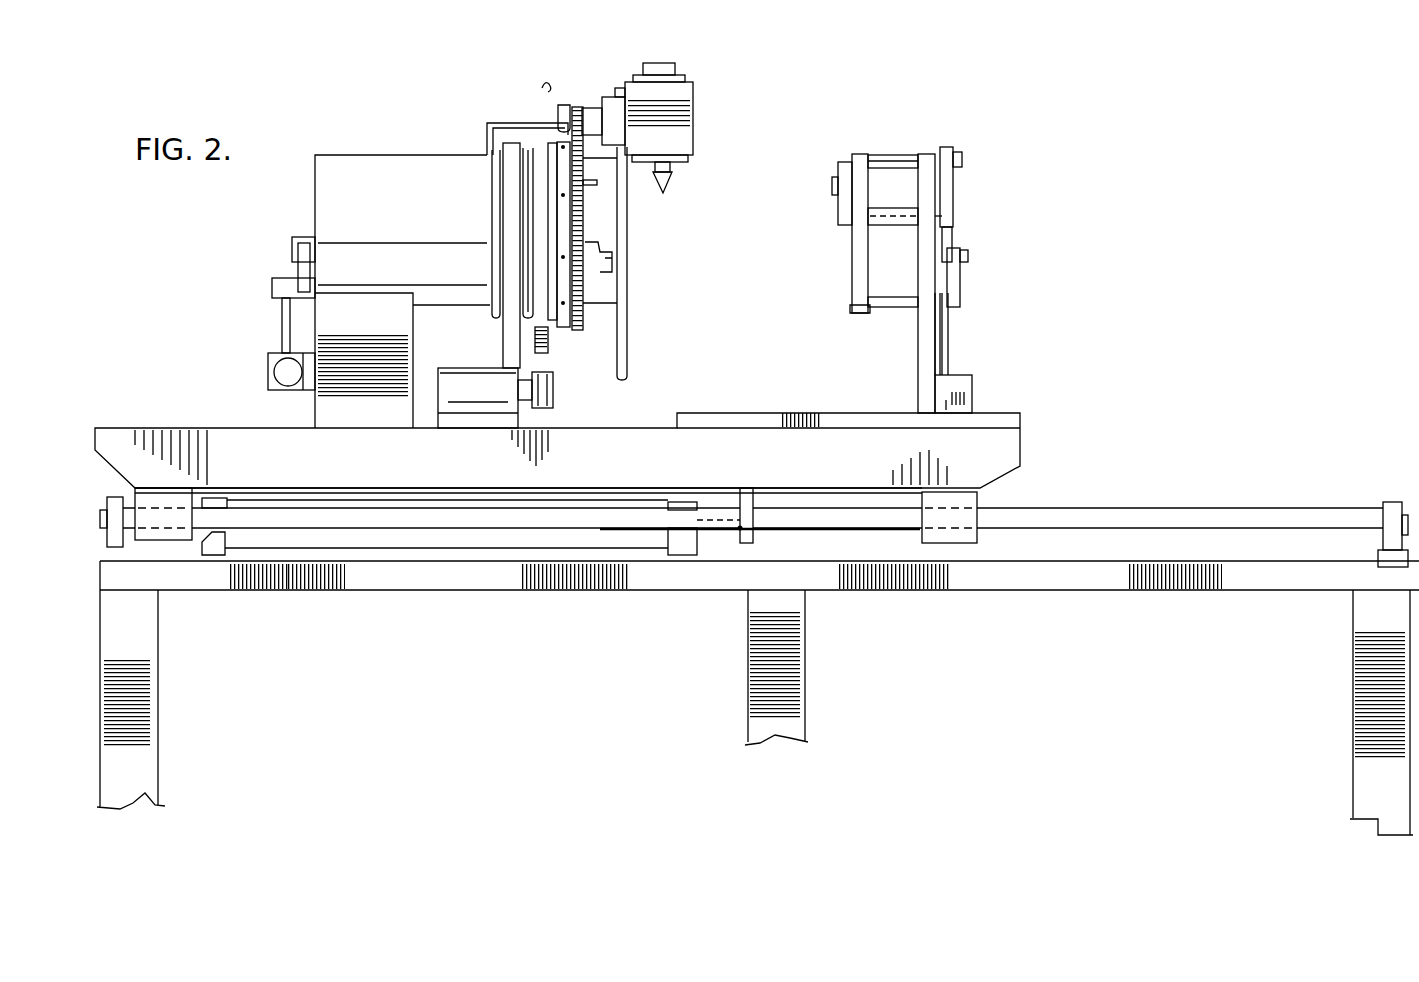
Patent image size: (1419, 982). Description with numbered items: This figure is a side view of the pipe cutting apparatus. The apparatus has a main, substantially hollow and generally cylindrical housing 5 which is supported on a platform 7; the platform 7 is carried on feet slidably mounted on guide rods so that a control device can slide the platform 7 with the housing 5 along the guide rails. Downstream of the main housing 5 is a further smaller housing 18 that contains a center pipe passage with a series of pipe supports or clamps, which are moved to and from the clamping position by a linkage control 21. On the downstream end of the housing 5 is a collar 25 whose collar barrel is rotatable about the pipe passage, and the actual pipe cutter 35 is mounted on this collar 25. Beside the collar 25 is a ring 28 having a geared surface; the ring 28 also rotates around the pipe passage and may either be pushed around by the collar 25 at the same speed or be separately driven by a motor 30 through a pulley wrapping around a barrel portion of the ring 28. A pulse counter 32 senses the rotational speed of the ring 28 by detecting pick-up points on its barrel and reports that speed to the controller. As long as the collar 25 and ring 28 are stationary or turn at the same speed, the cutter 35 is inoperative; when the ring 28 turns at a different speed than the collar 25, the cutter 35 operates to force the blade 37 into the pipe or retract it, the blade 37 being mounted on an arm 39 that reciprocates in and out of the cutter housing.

The main housing 5 is at (357, 155).
The platform 7 is at (1002, 453).
The further smaller housing 18 is at (918, 333).
The linkage control 21 is at (950, 143).
The collar 25 is at (628, 343).
The ring 28 is at (583, 103).
The motor 30 is at (465, 378).
The pulse counter 32 is at (563, 104).
The pipe cutter 35 is at (703, 120).
The blade 37 is at (673, 166).
The arm 39 is at (670, 184).